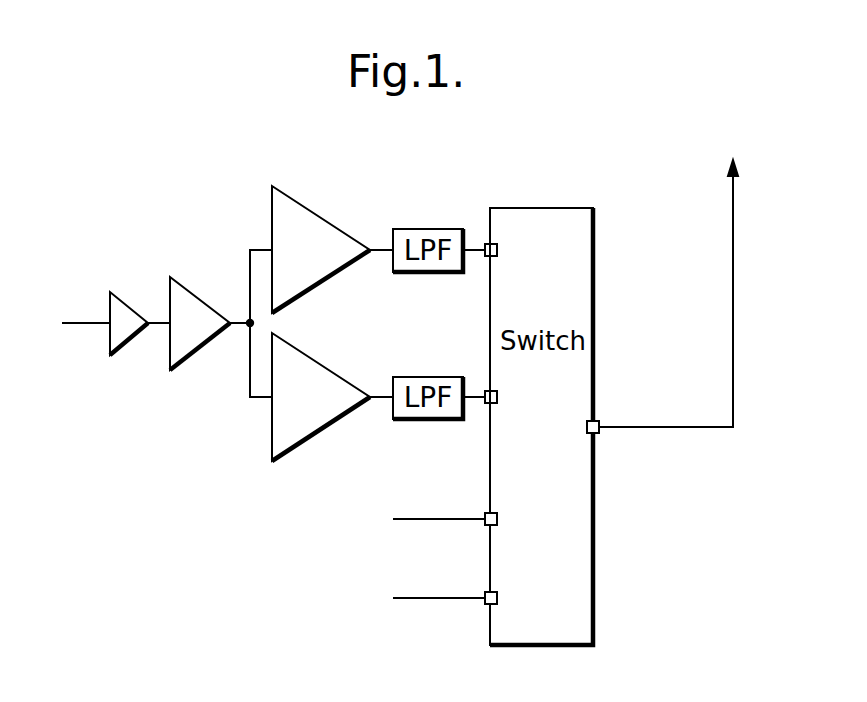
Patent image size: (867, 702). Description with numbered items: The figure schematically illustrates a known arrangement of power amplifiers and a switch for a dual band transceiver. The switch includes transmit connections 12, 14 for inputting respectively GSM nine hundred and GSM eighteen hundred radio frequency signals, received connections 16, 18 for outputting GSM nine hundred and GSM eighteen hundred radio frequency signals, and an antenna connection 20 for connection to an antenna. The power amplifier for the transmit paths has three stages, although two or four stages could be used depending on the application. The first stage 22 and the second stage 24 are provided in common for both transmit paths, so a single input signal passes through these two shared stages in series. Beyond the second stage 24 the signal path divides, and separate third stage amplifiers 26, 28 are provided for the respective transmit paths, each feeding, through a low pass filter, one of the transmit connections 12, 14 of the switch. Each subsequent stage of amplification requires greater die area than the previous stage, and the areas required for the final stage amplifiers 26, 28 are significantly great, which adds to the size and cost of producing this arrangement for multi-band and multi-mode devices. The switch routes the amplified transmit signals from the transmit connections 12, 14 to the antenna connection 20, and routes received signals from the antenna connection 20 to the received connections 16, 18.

The transmit connection 12 is at (485, 245).
The transmit connection 14 is at (485, 405).
The received connection 16 is at (485, 523).
The received connection 18 is at (485, 605).
The antenna connection 20 is at (600, 432).
The first stage 22 is at (131, 327).
The second stage 24 is at (193, 308).
The third stage amplifier 26 is at (303, 225).
The third stage amplifier 28 is at (303, 420).